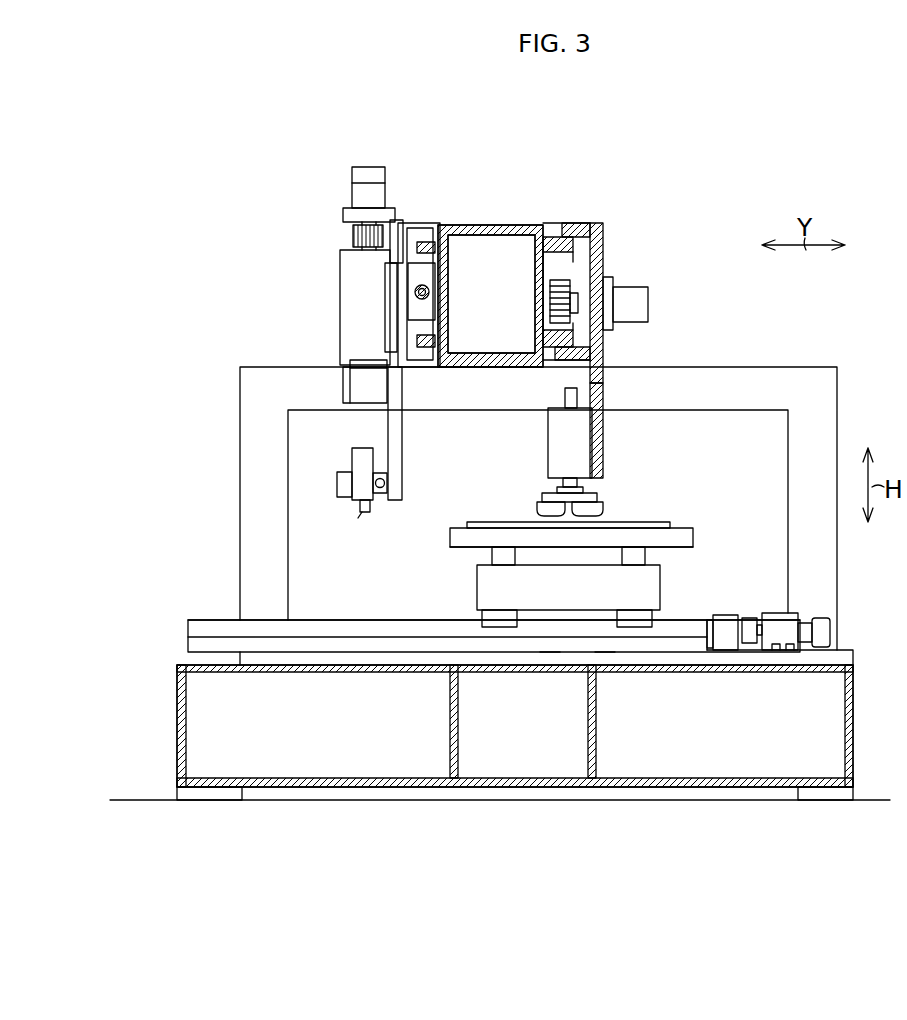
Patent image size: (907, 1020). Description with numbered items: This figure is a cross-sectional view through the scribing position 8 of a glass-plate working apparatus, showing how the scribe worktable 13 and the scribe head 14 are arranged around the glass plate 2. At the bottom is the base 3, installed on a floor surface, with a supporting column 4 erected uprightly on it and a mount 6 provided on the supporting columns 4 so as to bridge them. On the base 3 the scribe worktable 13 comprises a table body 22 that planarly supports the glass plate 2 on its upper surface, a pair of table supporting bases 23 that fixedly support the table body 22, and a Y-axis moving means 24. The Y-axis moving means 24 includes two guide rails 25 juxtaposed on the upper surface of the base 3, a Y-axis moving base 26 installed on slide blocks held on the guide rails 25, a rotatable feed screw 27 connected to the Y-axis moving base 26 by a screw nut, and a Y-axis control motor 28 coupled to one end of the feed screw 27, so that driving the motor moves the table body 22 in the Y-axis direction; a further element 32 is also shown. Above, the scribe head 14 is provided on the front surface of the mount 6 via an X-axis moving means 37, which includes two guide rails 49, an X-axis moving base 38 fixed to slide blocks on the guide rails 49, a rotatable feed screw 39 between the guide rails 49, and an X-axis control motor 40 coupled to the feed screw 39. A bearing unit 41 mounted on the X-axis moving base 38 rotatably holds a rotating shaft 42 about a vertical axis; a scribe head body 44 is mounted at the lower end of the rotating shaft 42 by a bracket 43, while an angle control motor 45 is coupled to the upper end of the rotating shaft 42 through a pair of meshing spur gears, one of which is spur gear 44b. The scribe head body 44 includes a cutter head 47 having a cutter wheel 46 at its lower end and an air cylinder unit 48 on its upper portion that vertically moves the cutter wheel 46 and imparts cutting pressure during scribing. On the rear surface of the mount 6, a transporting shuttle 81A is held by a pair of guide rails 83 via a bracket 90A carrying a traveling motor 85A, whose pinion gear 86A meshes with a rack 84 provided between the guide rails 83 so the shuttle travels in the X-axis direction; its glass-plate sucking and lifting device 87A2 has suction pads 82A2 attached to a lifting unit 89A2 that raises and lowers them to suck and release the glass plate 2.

The glass plate 2 is at (653, 525).
The base 3 is at (448, 668).
The supporting column 4 is at (815, 390).
The mount 6 is at (523, 237).
The scribing position 8 is at (430, 547).
The scribe worktable 13 is at (668, 540).
The scribe head 14 is at (347, 395).
The table body 22 is at (467, 547).
The table supporting base 23 is at (520, 563).
The Y-axis moving means 24 is at (555, 628).
The guide rail 25 is at (320, 652).
The Y-axis moving base 26 is at (627, 592).
The feed screw 27 is at (708, 643).
The Y-axis control motor 28 is at (823, 630).
The drive unit 32 is at (605, 628).
The X-axis moving means 37 is at (410, 297).
The X-axis moving base 38 is at (408, 227).
The feed screw 39 is at (429, 291).
The X-axis control motor 40 is at (430, 277).
The bearing unit 41 is at (353, 298).
The rotating shaft 42 is at (363, 363).
The bracket 43 is at (393, 415).
The scribe head body 44 is at (363, 452).
The spur gear 44b is at (352, 237).
The angle control motor 45 is at (368, 190).
The cutter wheel 46 is at (362, 507).
The cutter head 47 is at (363, 480).
The air cylinder unit 48 is at (357, 458).
The guide rail 49 is at (430, 247).
The transporting shuttle 81A is at (597, 232).
The suction pad 82A2 is at (597, 498).
The guide rail 83 is at (550, 240).
The rack 84 is at (602, 265).
The traveling motor 85A is at (642, 305).
The pinion gear 86A is at (580, 302).
The glass-plate sucking and lifting device 87A2 is at (585, 445).
The lifting unit 89A2 is at (560, 457).
The bracket 90A is at (568, 292).